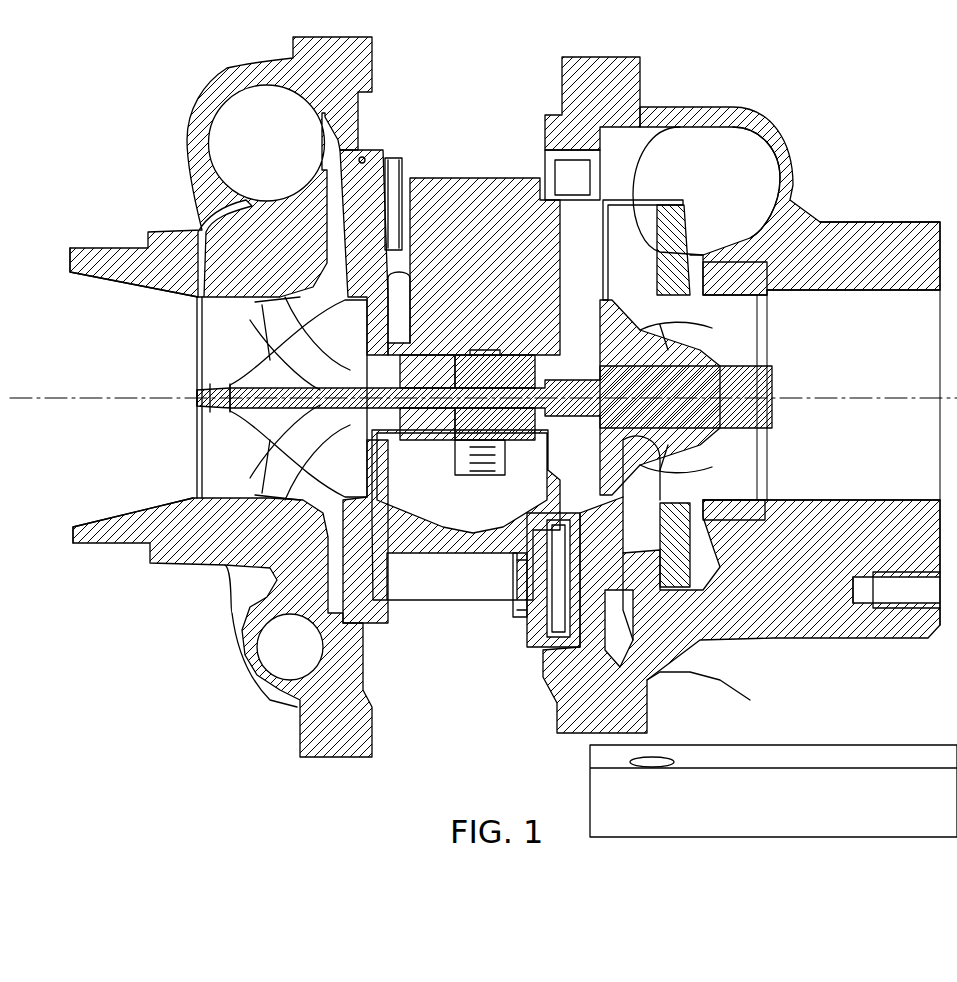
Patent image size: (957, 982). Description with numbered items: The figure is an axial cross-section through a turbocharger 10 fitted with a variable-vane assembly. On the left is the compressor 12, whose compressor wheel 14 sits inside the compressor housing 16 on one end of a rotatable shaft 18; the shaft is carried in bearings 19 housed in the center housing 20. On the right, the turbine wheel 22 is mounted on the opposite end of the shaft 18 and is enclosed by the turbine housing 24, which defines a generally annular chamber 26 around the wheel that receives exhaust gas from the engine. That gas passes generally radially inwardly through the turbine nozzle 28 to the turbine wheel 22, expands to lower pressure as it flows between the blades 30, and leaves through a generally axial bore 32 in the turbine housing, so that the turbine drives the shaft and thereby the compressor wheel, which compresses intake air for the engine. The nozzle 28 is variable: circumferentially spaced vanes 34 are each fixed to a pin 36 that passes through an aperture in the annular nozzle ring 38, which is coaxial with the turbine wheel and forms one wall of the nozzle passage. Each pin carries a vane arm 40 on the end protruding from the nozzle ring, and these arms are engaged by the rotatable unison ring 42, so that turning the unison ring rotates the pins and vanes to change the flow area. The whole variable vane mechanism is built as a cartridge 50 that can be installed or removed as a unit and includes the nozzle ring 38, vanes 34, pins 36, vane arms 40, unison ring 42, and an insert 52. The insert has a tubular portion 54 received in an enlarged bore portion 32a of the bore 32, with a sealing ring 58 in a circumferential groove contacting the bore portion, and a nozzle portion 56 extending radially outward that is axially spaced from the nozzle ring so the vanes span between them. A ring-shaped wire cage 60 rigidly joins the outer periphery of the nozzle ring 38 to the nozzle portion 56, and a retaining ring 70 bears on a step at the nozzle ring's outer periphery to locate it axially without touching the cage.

The turbocharger 10 is at (884, 175).
The compressor 12 is at (247, 483).
The compressor wheel 14 is at (287, 443).
The compressor housing 16 is at (133, 262).
The rotatable shaft 18 is at (540, 355).
The bearings 19 is at (447, 420).
The center housing 20 is at (470, 230).
The turbine wheel 22 is at (740, 390).
The turbine housing 24 is at (793, 185).
The annular chamber 26 is at (712, 130).
The turbine nozzle 28 is at (645, 530).
The blades 30 is at (685, 455).
The axial bore 32 is at (820, 290).
The bore portion 32a is at (760, 525).
The vanes 34 is at (631, 520).
The pin 36 is at (527, 650).
The nozzle ring 38 is at (513, 590).
The vane arm 40 is at (613, 220).
The unison ring 42 is at (590, 180).
The cartridge 50 is at (697, 195).
The insert 52 is at (680, 557).
The tubular portion 54 is at (710, 290).
The nozzle portion 56 is at (668, 237).
The sealing ring 58 is at (743, 510).
The wire cage 60 is at (677, 187).
The retaining ring 70 is at (542, 115).